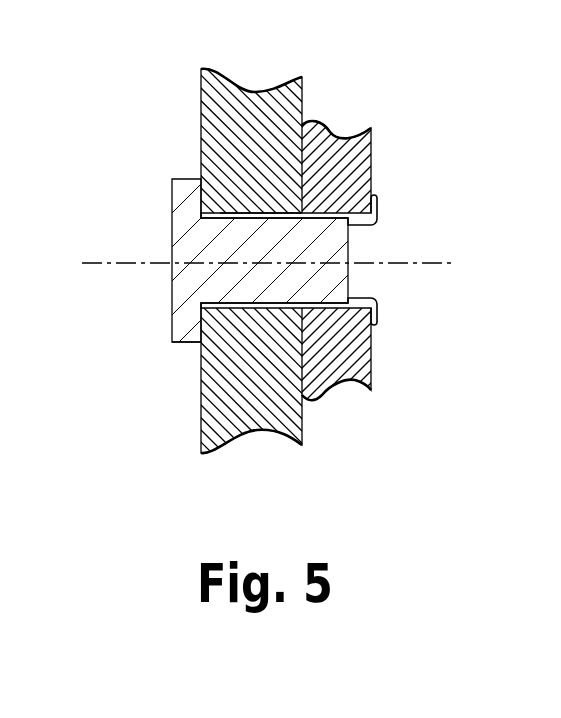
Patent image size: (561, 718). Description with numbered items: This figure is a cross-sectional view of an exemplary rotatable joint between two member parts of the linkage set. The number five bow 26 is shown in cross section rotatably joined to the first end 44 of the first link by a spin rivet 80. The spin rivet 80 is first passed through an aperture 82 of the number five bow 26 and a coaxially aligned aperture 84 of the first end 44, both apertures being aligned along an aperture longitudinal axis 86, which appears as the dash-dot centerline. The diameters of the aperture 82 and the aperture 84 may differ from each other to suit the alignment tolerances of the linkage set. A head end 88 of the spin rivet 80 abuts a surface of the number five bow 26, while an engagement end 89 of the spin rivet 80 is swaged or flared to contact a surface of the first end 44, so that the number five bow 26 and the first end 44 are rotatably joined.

The number five bow 26 is at (268, 100).
The first end 44 is at (370, 130).
The spin rivet 80 is at (172, 208).
The aperture 82 is at (238, 212).
The aperture 84 is at (373, 183).
The aperture longitudinal axis 86 is at (405, 262).
The head end 88 is at (180, 330).
The engagement end 89 is at (380, 323).